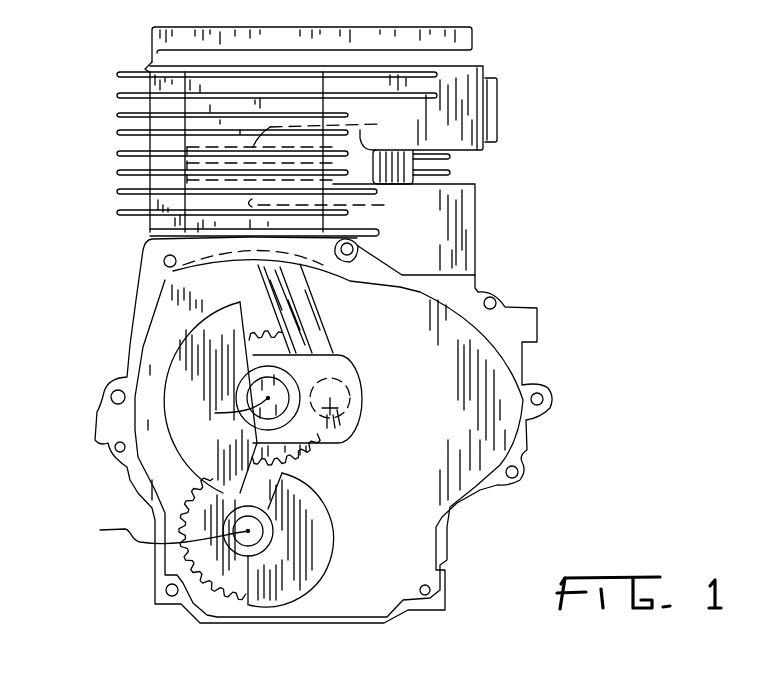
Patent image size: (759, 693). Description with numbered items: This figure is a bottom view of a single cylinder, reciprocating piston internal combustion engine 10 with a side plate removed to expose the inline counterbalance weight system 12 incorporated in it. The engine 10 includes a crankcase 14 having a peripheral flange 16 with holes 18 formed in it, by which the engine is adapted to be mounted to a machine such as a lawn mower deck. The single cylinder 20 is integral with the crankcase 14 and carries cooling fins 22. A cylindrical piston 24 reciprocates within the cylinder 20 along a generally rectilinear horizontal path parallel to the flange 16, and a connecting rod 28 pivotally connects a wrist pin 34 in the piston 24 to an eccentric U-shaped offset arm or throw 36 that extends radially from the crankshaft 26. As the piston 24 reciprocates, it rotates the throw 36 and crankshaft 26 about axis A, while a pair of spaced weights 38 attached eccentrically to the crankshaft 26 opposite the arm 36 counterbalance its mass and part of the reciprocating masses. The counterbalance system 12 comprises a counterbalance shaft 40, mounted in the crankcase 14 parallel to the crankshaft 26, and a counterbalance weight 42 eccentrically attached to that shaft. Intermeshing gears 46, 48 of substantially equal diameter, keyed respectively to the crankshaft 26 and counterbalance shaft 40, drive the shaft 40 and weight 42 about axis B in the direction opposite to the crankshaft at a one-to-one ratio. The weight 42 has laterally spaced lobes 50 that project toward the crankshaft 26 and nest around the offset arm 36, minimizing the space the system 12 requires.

The internal combustion engine 10 is at (542, 97).
The inline counterbalance weight system 12 is at (326, 497).
The crankcase 14 is at (486, 378).
The peripheral flange 16 is at (140, 326).
The holes 18 is at (355, 247).
The cylinder 20 is at (162, 182).
The cooling fins 22 is at (118, 78).
The piston 24 is at (362, 124).
The crankshaft 26 is at (268, 398).
The connecting rod 28 is at (292, 311).
The wrist pin 34 is at (335, 204).
The offset arm or throw 36 is at (335, 428).
The weights 38 is at (202, 450).
The counterbalance shaft 40 is at (248, 538).
The counterbalance weight 42 is at (272, 585).
The gear 46 is at (292, 462).
The gear 48 is at (192, 558).
The lobes 50 is at (300, 563).